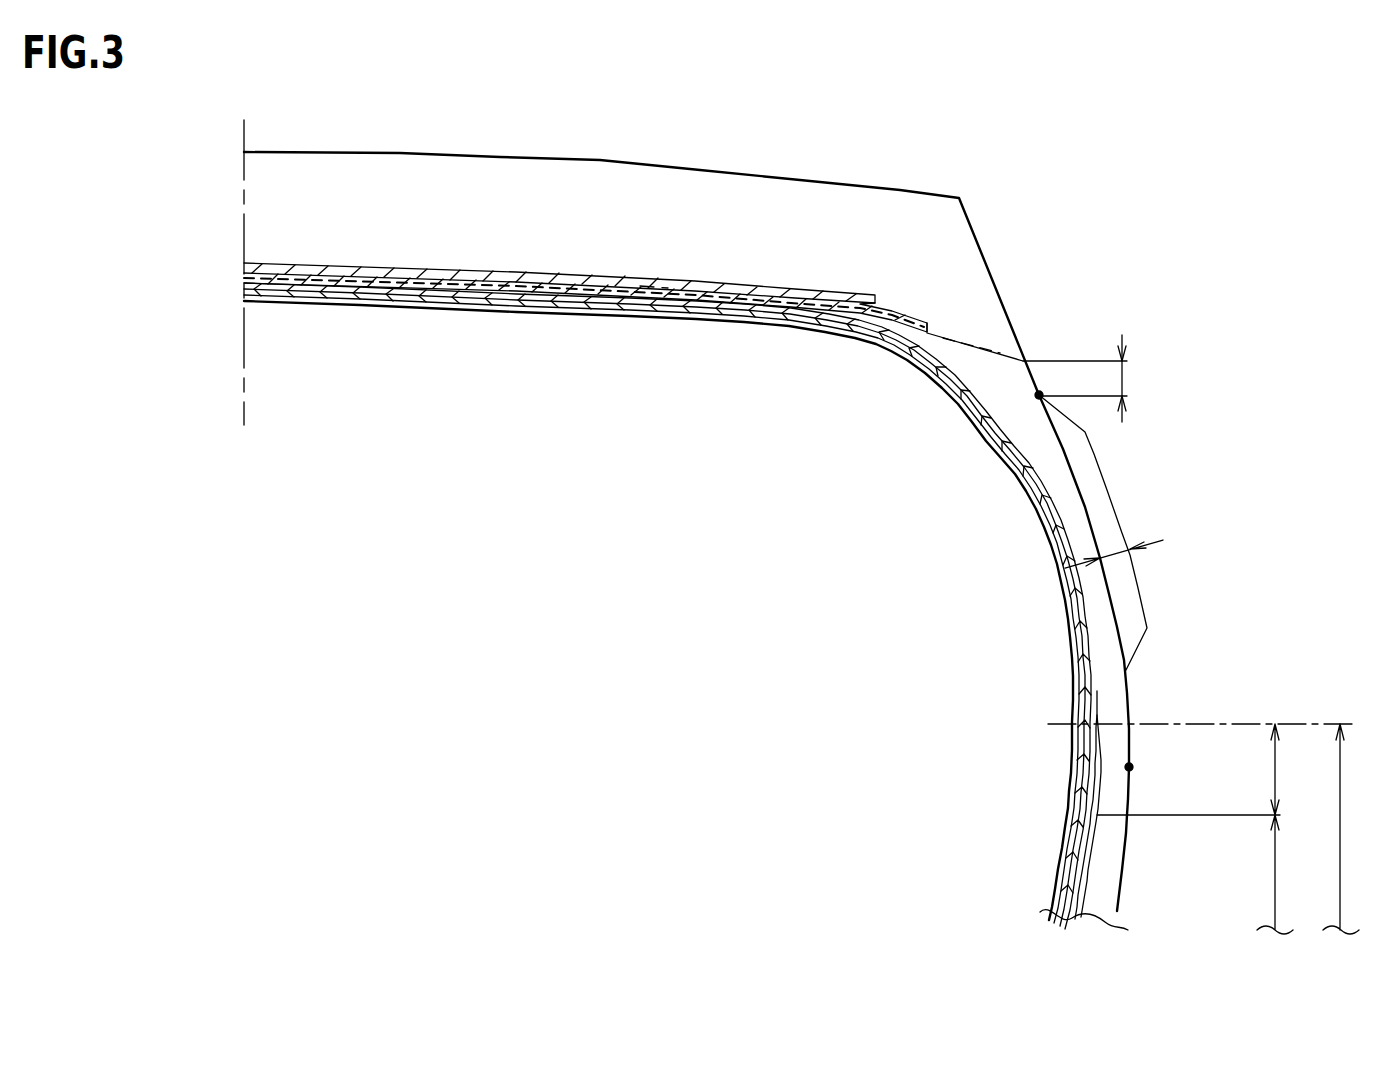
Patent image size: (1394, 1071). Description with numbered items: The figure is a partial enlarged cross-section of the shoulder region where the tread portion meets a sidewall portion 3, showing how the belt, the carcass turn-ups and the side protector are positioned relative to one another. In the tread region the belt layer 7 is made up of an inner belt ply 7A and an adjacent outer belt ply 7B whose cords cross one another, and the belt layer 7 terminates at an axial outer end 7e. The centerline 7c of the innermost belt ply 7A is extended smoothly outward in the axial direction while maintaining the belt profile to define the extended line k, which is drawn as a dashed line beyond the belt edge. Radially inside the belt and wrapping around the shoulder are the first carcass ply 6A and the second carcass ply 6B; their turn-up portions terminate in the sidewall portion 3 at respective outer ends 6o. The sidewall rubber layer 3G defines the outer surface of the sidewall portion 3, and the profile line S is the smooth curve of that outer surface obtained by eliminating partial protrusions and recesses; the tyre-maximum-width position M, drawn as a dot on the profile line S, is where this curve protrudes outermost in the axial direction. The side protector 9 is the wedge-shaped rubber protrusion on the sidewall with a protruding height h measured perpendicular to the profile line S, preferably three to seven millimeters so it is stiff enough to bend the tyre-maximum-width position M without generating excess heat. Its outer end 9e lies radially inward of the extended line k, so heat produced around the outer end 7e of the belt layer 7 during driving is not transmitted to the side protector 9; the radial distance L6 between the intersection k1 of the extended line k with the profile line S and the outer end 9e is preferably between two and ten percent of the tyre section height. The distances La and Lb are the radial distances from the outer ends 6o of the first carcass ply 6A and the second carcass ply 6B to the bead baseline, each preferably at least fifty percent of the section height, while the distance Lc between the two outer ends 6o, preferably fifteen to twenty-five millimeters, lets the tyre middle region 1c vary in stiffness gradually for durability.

The belt layer 7 is at (585, 347).
The inner belt ply 7A is at (365, 383).
The outer belt ply 7B is at (390, 268).
The centerline of the innermost belt ply 7c is at (653, 287).
The axial outer end of the belt layer 7e is at (927, 328).
The extended line k is at (972, 340).
The intersection of the extended line to the profile line k1 is at (1027, 361).
The distance between intersection k1 and outer end 9e L6 is at (1094, 378).
The side protector 9 is at (1122, 585).
The outer end of the side protector 9e is at (1041, 397).
The protruding height h is at (1113, 552).
The outer end of the turn-up portion 6o is at (1088, 705).
The tyre middle region 1c is at (672, 606).
The first carcass ply 6A is at (1090, 850).
The second carcass ply 6B is at (1077, 897).
The sidewall portion 3 is at (1138, 658).
The sidewall rubber layer 3G is at (1103, 882).
The profile line S is at (1132, 743).
The tyre-maximum-width position M is at (1131, 769).
The distance between the outer ends of the first and second carcass plies Lc is at (1295, 769).
The distance between outer end of second carcass ply and bead baseline Lb is at (1290, 874).
The distance between outer end of first carcass ply and bead baseline La is at (1353, 829).